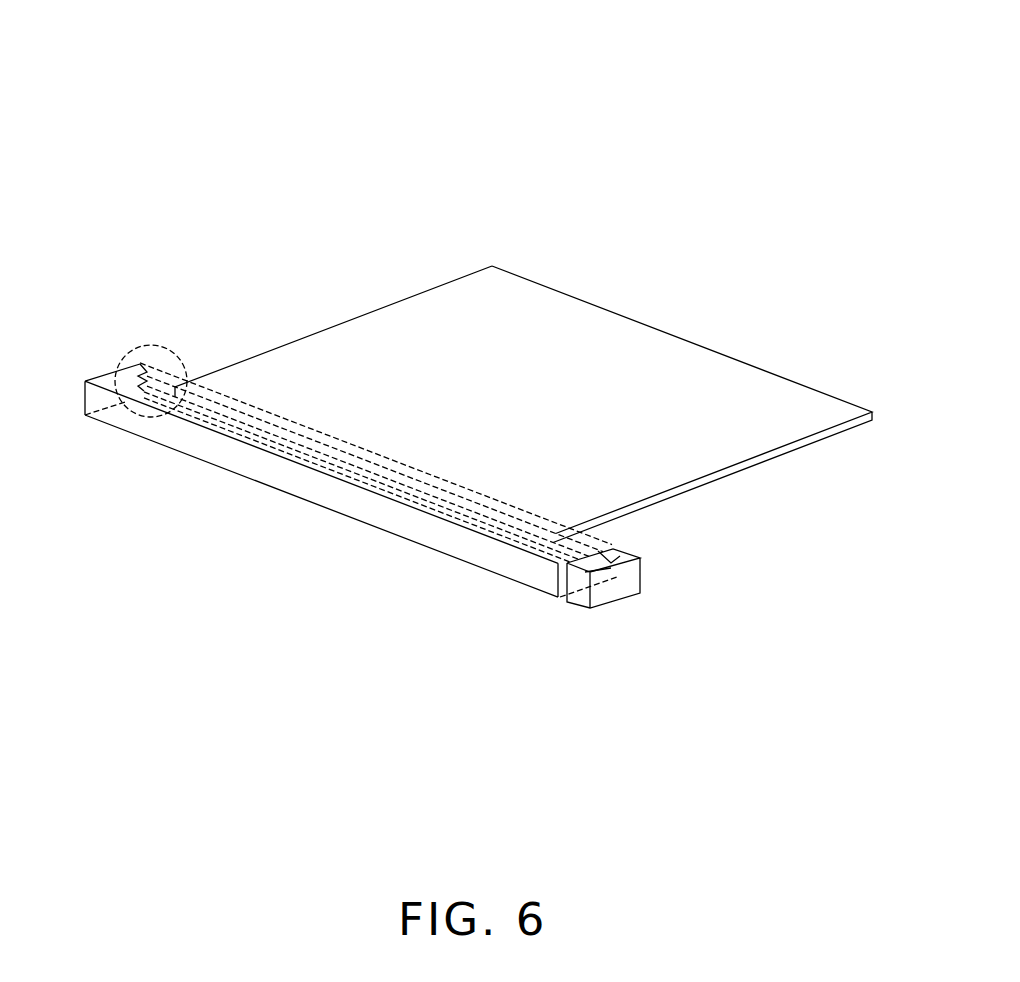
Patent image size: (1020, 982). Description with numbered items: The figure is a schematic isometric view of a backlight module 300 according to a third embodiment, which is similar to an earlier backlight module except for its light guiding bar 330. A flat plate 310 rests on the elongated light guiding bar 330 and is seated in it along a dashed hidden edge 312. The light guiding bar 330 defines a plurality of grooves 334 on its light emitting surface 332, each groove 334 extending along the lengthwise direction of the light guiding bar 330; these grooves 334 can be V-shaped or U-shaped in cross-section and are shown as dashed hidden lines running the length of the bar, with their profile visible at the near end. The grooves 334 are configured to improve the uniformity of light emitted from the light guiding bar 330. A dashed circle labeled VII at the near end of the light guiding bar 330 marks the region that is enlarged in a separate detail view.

The backlight module 300 is at (395, 88).
The panel 310 is at (688, 365).
The protrusion of panel 312 is at (195, 380).
The light guiding bar 330 is at (162, 432).
The light emitting surface 332 is at (605, 537).
The grooves 334 is at (152, 388).
The detail view circle VII is at (137, 350).